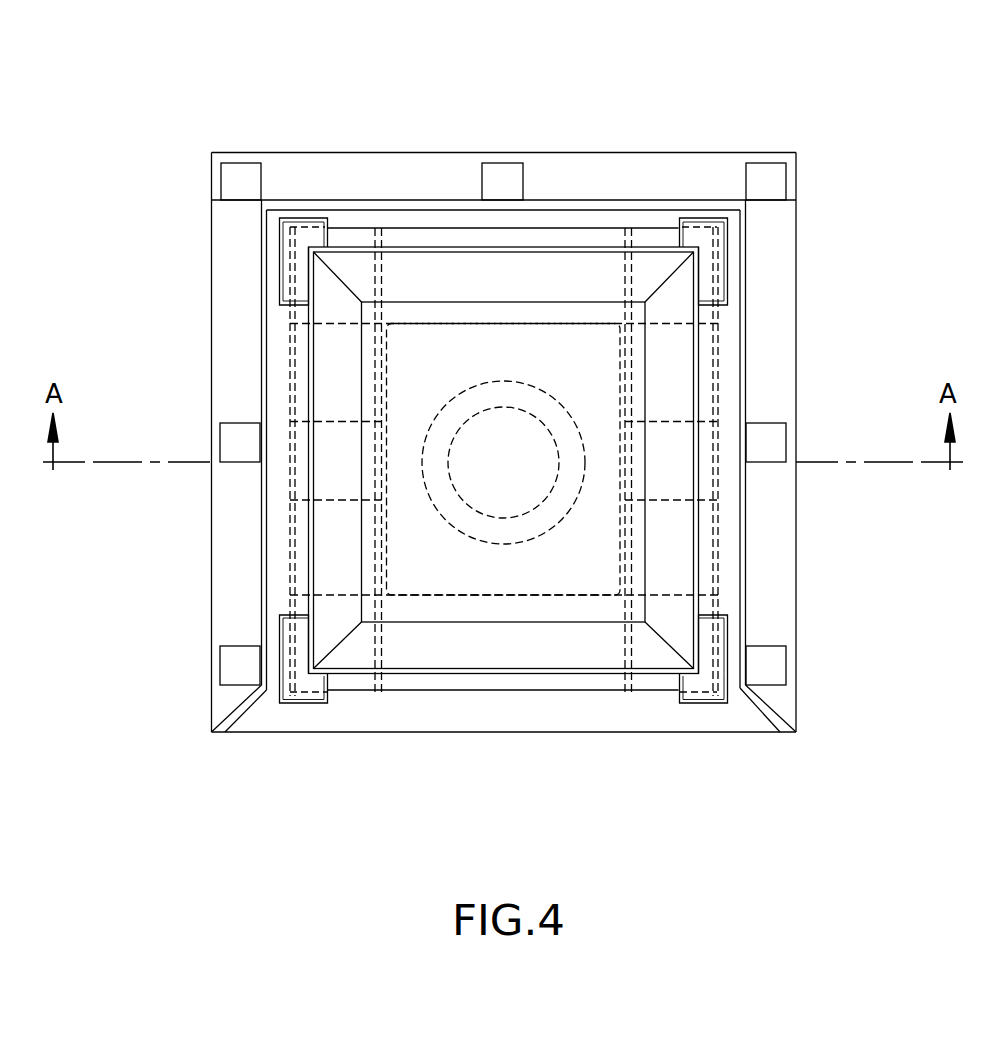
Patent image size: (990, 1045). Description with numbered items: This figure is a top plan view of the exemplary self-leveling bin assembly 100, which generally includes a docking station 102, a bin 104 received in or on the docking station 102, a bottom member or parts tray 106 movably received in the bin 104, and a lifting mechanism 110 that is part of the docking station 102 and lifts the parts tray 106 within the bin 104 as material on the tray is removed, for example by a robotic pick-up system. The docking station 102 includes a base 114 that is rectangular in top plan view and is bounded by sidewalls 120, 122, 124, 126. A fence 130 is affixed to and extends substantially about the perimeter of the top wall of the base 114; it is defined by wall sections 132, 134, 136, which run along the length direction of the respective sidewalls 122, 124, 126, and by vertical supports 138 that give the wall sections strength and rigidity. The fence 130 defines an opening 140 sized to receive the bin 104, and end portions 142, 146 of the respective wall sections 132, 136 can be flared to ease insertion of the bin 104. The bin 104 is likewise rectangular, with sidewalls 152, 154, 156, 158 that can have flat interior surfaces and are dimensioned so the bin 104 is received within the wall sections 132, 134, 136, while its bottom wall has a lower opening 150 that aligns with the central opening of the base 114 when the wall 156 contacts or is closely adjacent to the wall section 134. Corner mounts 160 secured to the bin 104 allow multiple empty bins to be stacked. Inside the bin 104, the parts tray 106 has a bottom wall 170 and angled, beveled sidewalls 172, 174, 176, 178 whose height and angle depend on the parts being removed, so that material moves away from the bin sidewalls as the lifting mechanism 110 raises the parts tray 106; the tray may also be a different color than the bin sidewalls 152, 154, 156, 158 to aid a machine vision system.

The self-leveling bin assembly 100 is at (215, 128).
The docking station 102 is at (674, 143).
The bin 104 is at (341, 220).
The parts tray 106 is at (678, 333).
The lifting mechanism 110 is at (487, 517).
The base 114 is at (785, 573).
The sidewall 120 is at (346, 732).
The sidewall 122 is at (797, 410).
The sidewall 124 is at (443, 152).
The sidewall 126 is at (212, 328).
The fence 130 is at (763, 239).
The wall section 132 is at (748, 530).
The wall section 134 is at (601, 200).
The wall section 136 is at (265, 533).
The vertical supports 138 is at (255, 152).
The opening 140 is at (519, 869).
The end portion 142 is at (758, 712).
The end portion 146 is at (248, 707).
The lower opening 150 is at (552, 520).
The sidewall 152 is at (587, 685).
The sidewall 154 is at (718, 482).
The sidewall 156 is at (393, 237).
The sidewall 158 is at (296, 400).
The corner mounts 160 is at (720, 216).
The bottom wall 170 is at (522, 364).
The sidewall 172 is at (433, 643).
The sidewall 174 is at (668, 373).
The sidewall 176 is at (538, 280).
The sidewall 178 is at (340, 580).